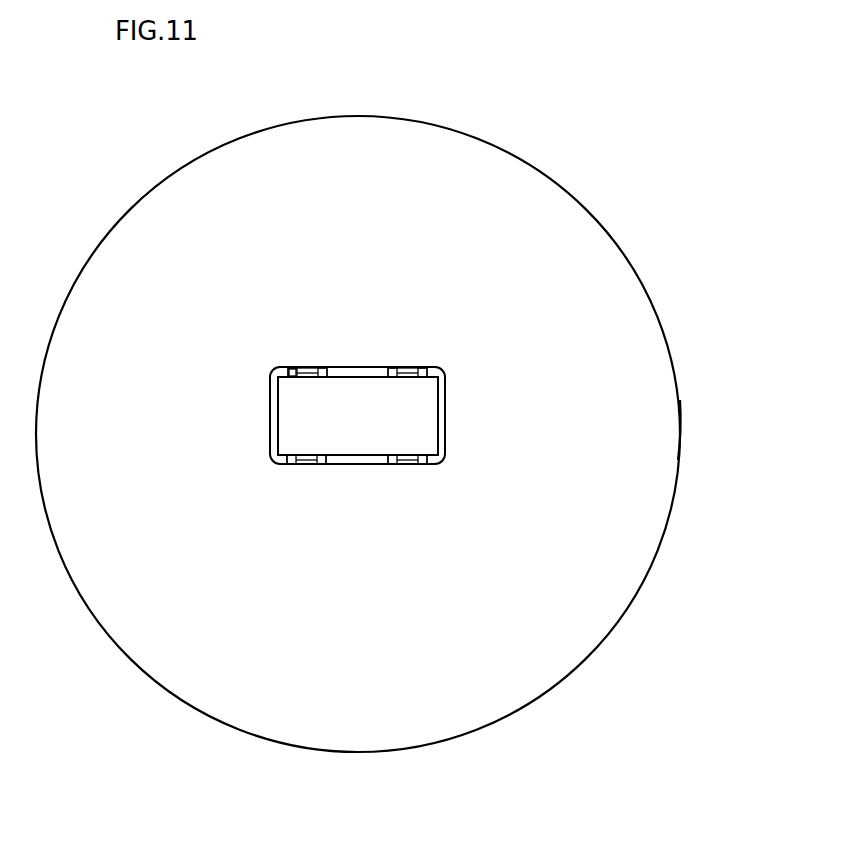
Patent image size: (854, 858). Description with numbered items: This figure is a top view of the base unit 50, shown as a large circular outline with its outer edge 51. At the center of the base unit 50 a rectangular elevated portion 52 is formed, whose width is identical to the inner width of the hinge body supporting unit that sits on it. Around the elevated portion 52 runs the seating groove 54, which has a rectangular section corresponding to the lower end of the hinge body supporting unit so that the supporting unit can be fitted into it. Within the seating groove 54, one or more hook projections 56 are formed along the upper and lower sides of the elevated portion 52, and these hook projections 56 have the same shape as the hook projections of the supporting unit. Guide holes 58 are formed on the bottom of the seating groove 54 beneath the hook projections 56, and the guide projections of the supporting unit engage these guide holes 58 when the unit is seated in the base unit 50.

The base unit 50 is at (556, 218).
The wafer edge 51 is at (663, 430).
The elevated portion 52 is at (425, 418).
The seating groove 54 is at (443, 438).
The hook projections 56 is at (403, 368).
The guide holes 58 is at (293, 368).